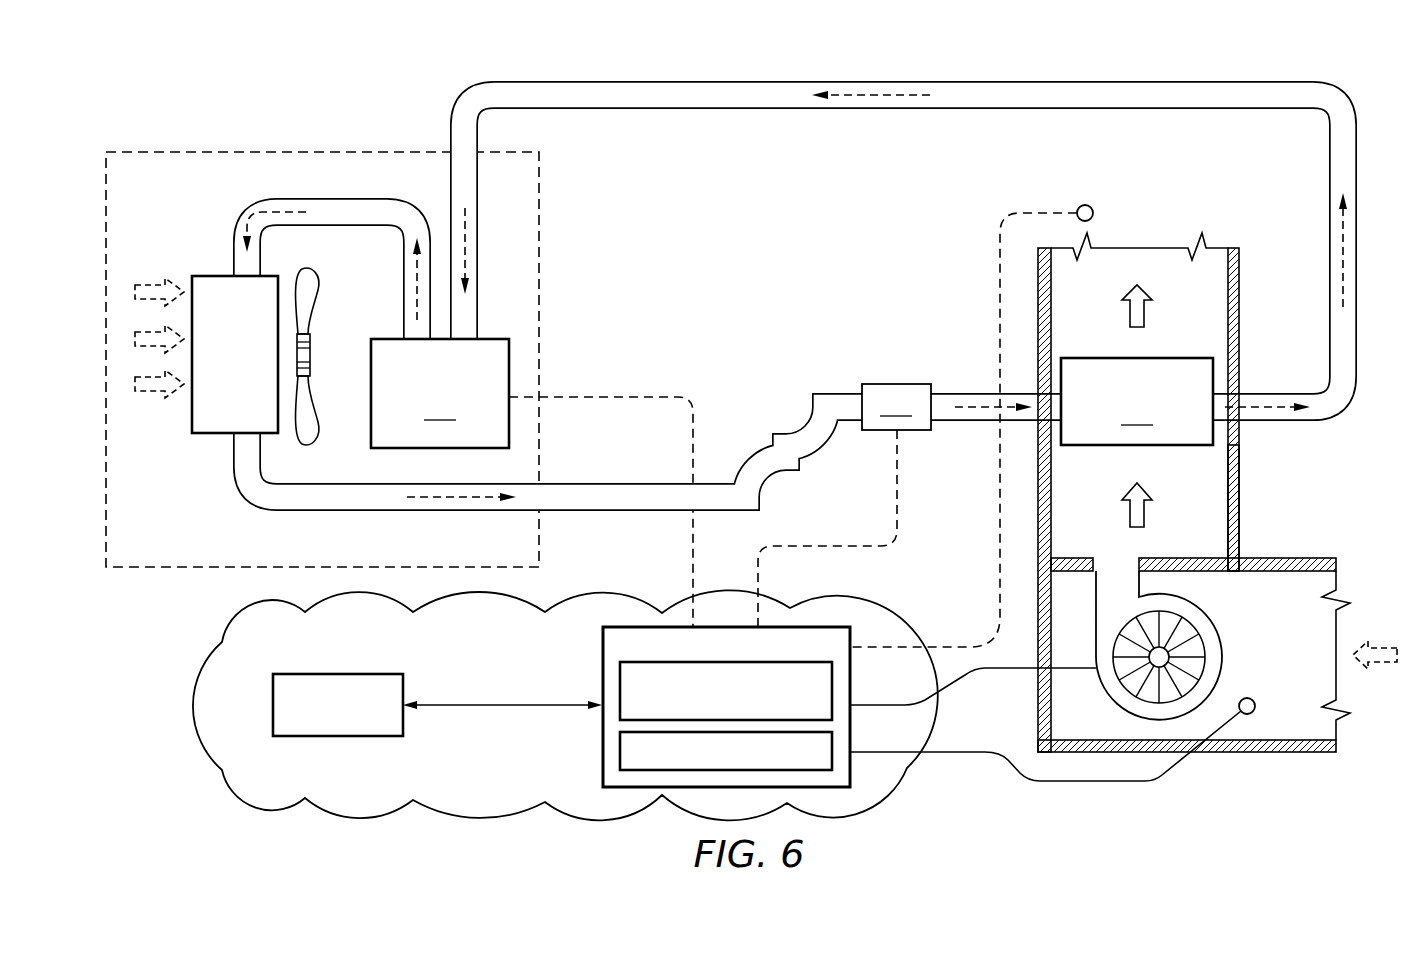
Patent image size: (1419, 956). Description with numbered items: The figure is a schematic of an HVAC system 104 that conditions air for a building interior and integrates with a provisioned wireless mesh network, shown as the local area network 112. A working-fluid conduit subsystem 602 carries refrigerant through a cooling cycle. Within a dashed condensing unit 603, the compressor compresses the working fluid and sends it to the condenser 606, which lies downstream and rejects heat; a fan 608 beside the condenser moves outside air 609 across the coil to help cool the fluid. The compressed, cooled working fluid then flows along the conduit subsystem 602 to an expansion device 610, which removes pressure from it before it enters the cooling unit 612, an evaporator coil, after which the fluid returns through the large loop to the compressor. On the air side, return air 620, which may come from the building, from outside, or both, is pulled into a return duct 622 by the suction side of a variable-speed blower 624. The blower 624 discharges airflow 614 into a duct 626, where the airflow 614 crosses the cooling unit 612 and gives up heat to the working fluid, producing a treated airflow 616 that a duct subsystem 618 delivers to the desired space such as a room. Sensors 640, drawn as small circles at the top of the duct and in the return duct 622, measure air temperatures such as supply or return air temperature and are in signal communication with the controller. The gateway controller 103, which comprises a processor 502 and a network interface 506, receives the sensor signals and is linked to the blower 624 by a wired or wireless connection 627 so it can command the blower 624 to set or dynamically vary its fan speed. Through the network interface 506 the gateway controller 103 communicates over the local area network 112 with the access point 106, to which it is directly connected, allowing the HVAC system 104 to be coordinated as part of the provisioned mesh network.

The HVAC system 104 is at (1192, 33).
The working-fluid conduit subsystem 602 is at (622, 81).
The condensing unit 603 is at (320, 152).
The condenser coil 606 is at (192, 431).
The fan 608 is at (322, 290).
The air 609 is at (136, 284).
The expansion device 610 is at (844, 505).
The cooling unit 612 is at (1137, 401).
The airflow 614 is at (1145, 512).
The treated airflow 616 is at (1145, 320).
The duct subsystem 618 is at (1239, 295).
The return air 620 is at (1383, 668).
The return duct 622 is at (1267, 752).
The variable-speed blower 624 is at (1213, 617).
The duct 626 is at (1239, 475).
The wired or wireless connection 627 is at (957, 683).
The sensor 640 is at (1093, 213).
The local area network 112 is at (464, 631).
The access point 106 is at (273, 701).
The gateway controller 103 is at (760, 654).
The network interface 506 is at (711, 712).
The processor 502 is at (755, 761).